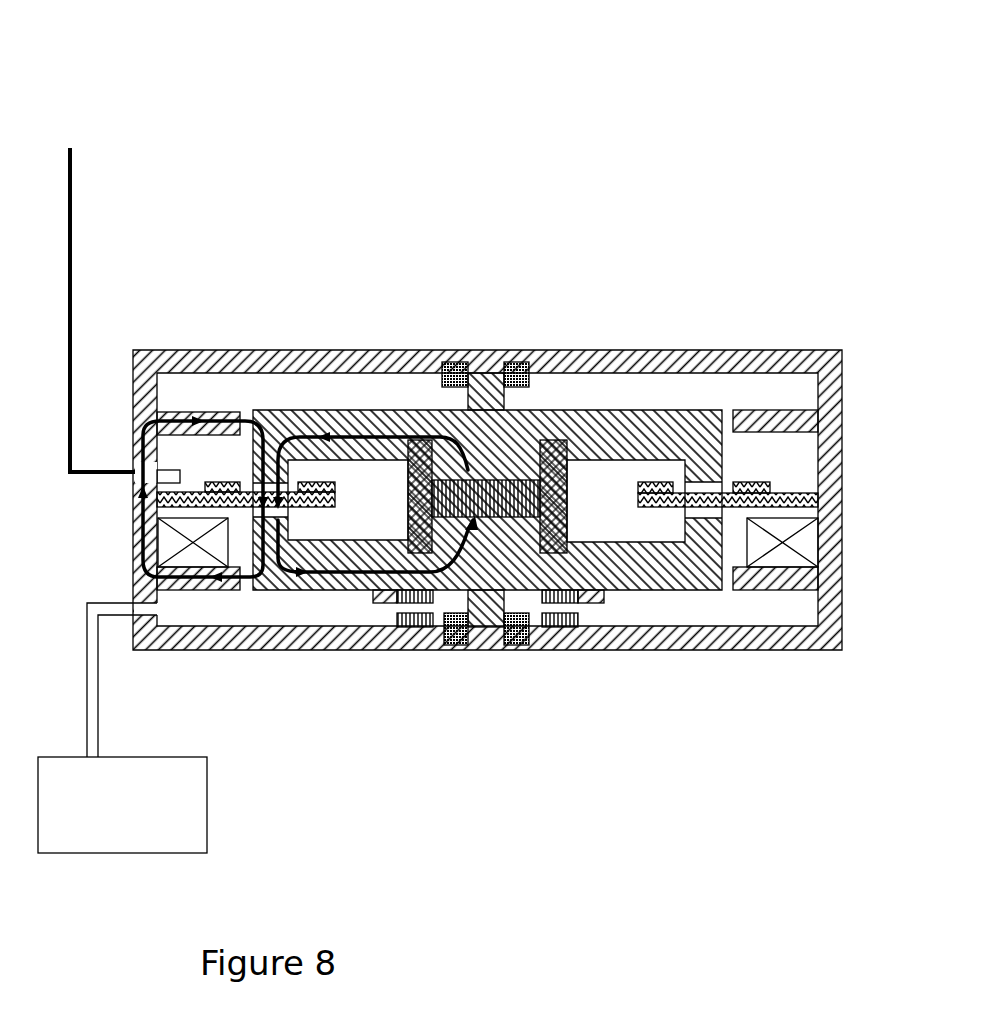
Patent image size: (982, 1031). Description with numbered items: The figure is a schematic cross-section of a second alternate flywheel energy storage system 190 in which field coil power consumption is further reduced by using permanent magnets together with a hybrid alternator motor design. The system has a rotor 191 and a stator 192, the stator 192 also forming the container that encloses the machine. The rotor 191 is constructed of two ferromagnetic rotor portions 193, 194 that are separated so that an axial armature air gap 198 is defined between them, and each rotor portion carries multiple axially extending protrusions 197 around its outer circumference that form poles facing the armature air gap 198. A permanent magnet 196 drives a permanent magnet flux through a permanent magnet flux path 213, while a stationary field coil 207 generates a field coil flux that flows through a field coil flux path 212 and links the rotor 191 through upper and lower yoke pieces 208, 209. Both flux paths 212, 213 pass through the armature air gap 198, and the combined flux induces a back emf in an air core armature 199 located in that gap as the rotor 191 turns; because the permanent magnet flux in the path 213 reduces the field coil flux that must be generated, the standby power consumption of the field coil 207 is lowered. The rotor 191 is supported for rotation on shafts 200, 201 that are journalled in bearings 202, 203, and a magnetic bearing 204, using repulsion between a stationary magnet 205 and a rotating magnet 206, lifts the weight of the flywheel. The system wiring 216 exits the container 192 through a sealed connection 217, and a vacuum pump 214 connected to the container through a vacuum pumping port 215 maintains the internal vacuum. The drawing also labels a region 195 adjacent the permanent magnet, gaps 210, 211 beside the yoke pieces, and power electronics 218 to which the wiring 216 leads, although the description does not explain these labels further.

The flywheel energy storage system 190 is at (297, 60).
The rotor 191 is at (612, 385).
The stator 192 is at (717, 350).
The ferromagnetic rotor portion 193 is at (515, 503).
The ferromagnetic rotor portion 194 is at (323, 593).
The motor stator 195 is at (568, 525).
The permanent magnet 196 is at (568, 470).
The axially extending protrusion 197 is at (722, 478).
The armature air gap 198 is at (680, 513).
The air core armature 199 is at (768, 508).
The shaft 200 is at (490, 362).
The shaft 201 is at (487, 628).
The bearing 202 is at (517, 362).
The bearing 203 is at (520, 640).
The magnetic bearing 204 is at (581, 604).
The stationary magnet 205 is at (548, 627).
The rotating magnet 206 is at (405, 600).
The field coil 207 is at (808, 540).
The upper yoke piece 208 is at (777, 408).
The lower yoke piece 209 is at (788, 588).
The upper gap 210 is at (719, 403).
The lower gap 211 is at (726, 590).
The field coil flux path 212 is at (183, 580).
The permanent magnet flux path 213 is at (373, 440).
The vacuum pump 214 is at (170, 757).
The vacuum pumping port 215 is at (100, 680).
The system wiring 216 is at (73, 300).
The sealed connection 217 is at (130, 493).
The power electronics 218 is at (101, 146).